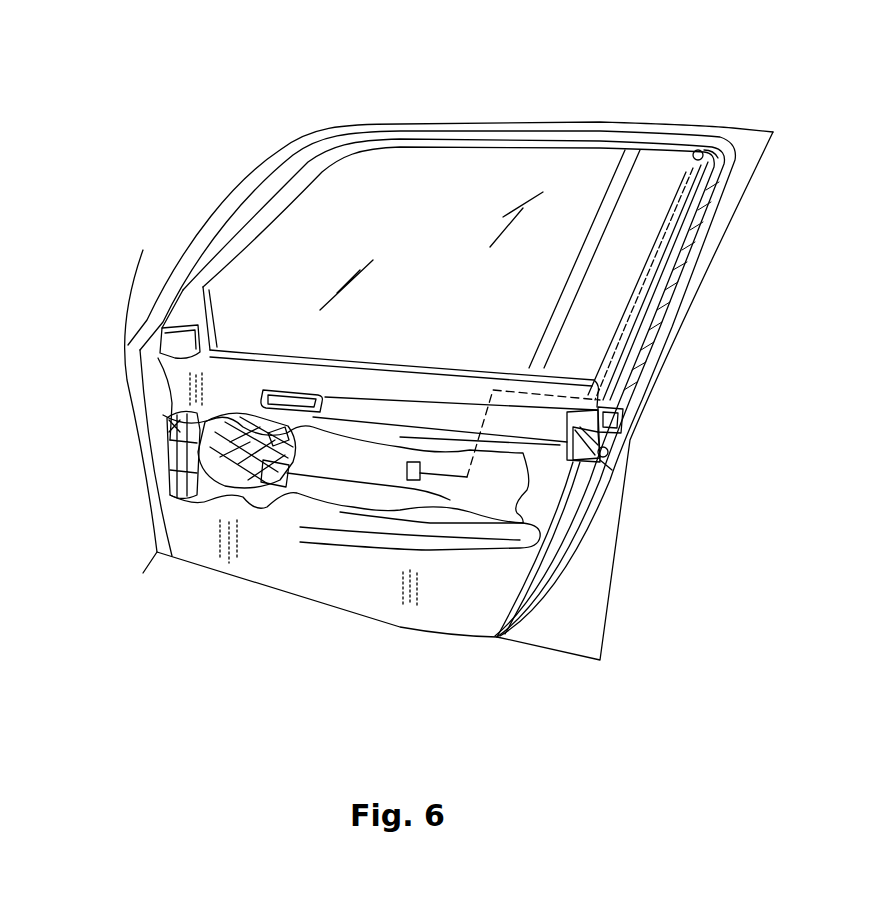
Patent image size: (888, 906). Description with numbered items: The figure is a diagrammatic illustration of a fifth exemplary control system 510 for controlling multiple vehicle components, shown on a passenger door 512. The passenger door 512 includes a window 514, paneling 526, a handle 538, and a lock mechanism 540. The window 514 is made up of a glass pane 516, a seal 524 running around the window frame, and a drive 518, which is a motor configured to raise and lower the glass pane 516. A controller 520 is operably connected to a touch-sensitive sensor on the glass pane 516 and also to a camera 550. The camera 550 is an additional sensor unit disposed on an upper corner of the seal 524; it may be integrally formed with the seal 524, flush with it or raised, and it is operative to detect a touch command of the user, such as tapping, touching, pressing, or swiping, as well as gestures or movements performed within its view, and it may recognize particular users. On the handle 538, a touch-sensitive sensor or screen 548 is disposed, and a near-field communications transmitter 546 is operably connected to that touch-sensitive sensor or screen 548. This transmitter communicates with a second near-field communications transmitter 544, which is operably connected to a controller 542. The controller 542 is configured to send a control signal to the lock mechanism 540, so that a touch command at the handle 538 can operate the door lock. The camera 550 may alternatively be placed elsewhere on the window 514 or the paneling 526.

The control system 510 is at (627, 101).
The passenger door 512 is at (737, 173).
The window 514 is at (375, 138).
The glass pane 516 is at (497, 200).
The drive 518 is at (210, 443).
The controller 520 is at (402, 533).
The seal 524 is at (287, 160).
The paneling 526 is at (507, 578).
The handle 538 is at (303, 405).
The lock mechanism 540 is at (620, 413).
The controller 542 is at (600, 467).
The near-field communications transmitter 544 is at (612, 452).
The near-field communications transmitter 546 is at (260, 410).
The touch-sensitive sensor or screen 548 is at (317, 410).
The camera 550 is at (713, 145).